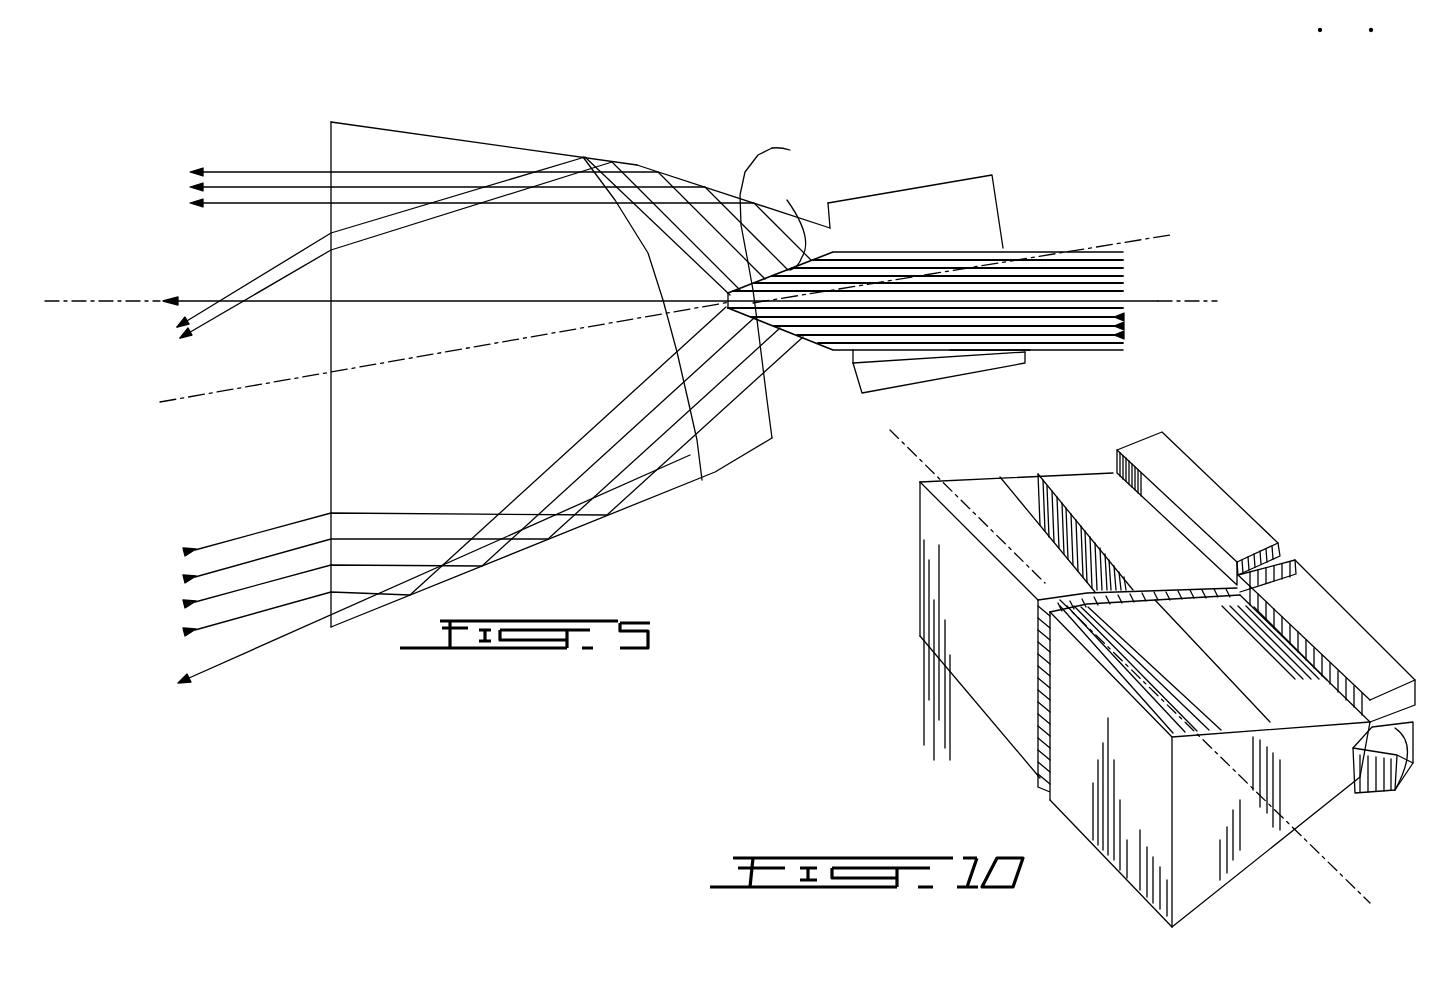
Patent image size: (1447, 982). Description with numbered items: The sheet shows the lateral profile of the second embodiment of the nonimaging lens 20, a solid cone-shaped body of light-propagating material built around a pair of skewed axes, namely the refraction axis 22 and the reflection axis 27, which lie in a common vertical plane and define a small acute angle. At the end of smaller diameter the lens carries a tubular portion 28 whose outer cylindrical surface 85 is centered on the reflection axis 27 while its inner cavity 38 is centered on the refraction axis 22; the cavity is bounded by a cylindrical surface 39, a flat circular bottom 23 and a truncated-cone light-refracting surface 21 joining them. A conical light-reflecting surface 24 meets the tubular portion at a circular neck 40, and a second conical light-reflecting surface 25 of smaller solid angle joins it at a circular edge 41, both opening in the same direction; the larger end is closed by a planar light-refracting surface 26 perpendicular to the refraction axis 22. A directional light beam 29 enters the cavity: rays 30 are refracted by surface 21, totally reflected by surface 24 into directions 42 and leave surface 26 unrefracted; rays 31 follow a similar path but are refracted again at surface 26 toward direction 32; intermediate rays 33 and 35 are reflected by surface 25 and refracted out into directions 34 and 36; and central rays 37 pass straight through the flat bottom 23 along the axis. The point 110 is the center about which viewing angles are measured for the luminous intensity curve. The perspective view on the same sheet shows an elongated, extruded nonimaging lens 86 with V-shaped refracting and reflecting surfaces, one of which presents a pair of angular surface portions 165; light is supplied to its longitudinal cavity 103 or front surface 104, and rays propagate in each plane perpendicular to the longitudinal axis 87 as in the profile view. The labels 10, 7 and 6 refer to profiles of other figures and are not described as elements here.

In FIG. 5, the nonimaging lens 20 is at (672, 145).
In FIG. 5, the light-refracting surface 21 is at (780, 220).
In FIG. 5, the refraction axis 22 is at (133, 300).
In FIG. 5, the flat circular bottom 23 is at (768, 420).
In FIG. 5, the light-reflecting surface 24 is at (727, 190).
In FIG. 5, the light-reflecting surface 25 is at (478, 133).
In FIG. 5, the planar light-refracting surface 26 is at (330, 440).
In FIG. 5, the reflection axis 27 is at (476, 355).
In FIG. 5, the tubular portion 28 is at (903, 372).
In FIG. 10, the tubular portion 28 is at (1326, 641).
In FIG. 5, the light beam 29 is at (1080, 315).
In FIG. 5, the light rays 30 is at (253, 203).
In FIG. 5, the light rays 31 is at (356, 603).
In FIG. 5, the direction 32 is at (185, 684).
In FIG. 5, the intermediate light rays 33 is at (1118, 317).
In FIG. 5, the directions 34 is at (190, 551).
In FIG. 5, the intermediate light rays 35 is at (405, 212).
In FIG. 5, the directions 36 is at (176, 330).
In FIG. 5, the central light rays 37 is at (548, 300).
In FIG. 5, the inner cavity 38 is at (1014, 250).
In FIG. 5, the cylindrical surface 39 is at (953, 345).
In FIG. 5, the circular neck 40 is at (855, 365).
In FIG. 5, the circular edge 41 is at (703, 480).
In FIG. 5, the directions 42 is at (190, 172).
In FIG. 5, the outer cylindrical surface 85 is at (930, 175).
In FIG. 5, the point 110 is at (797, 152).
In FIG. 10, the nonimaging lens 86 is at (898, 563).
In FIG. 10, the longitudinal axis 87 is at (1305, 840).
In FIG. 10, the longitudinal cavity 103 is at (1403, 773).
In FIG. 10, the front surface 104 is at (955, 658).
In FIG. 10, the angular surface portion 165 is at (1022, 508).
In FIG. 10, the alignment rail 10 is at (1210, 490).
In FIG. 10, the fiber carrier block 7 is at (1223, 710).
In FIG. 10, the groove face 6 is at (1305, 702).